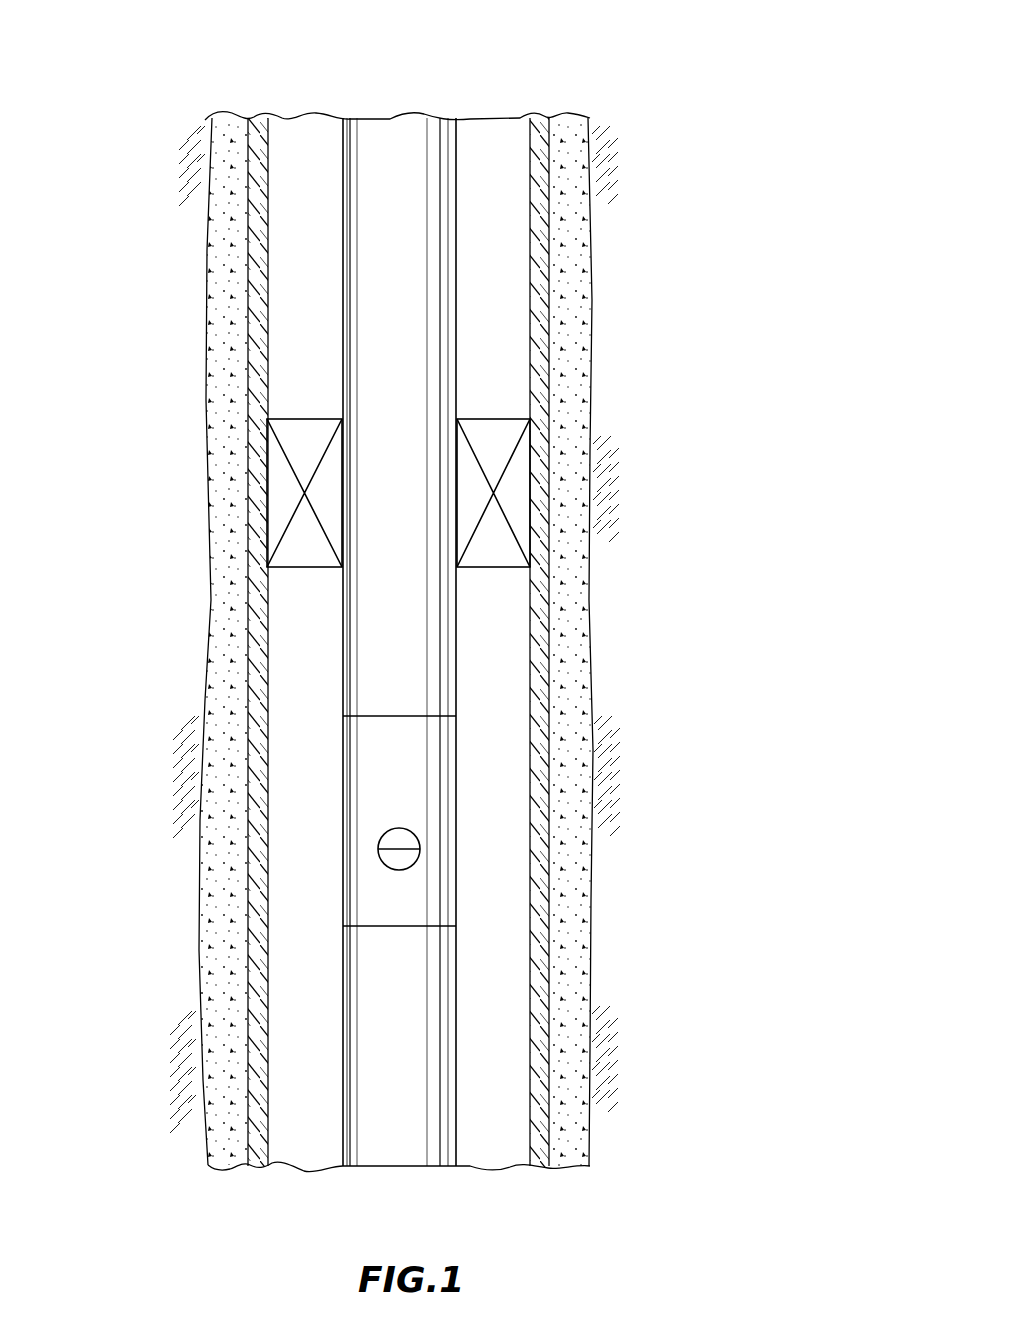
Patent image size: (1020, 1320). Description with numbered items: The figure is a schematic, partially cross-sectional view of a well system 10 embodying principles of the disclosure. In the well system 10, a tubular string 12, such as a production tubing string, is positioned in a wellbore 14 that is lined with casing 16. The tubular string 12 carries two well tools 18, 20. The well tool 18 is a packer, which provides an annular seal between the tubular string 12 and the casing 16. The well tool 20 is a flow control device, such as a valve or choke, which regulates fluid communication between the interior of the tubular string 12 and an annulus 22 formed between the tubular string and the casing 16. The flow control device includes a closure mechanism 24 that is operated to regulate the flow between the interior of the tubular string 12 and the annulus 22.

The well system 10 is at (734, 78).
The tubular string 12 is at (458, 290).
The wellbore 14 is at (213, 304).
The casing 16 is at (248, 1002).
The well tool 18 is at (512, 418).
The well tool 20 is at (456, 743).
The annulus 22 is at (300, 618).
The closure mechanism 24 is at (397, 850).